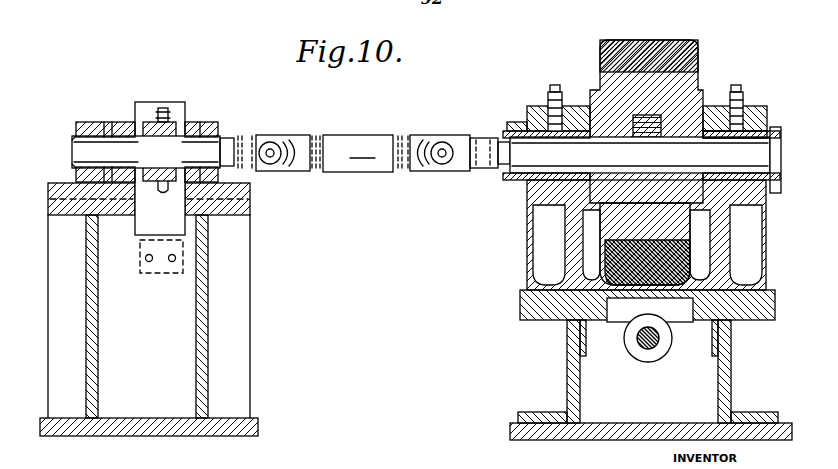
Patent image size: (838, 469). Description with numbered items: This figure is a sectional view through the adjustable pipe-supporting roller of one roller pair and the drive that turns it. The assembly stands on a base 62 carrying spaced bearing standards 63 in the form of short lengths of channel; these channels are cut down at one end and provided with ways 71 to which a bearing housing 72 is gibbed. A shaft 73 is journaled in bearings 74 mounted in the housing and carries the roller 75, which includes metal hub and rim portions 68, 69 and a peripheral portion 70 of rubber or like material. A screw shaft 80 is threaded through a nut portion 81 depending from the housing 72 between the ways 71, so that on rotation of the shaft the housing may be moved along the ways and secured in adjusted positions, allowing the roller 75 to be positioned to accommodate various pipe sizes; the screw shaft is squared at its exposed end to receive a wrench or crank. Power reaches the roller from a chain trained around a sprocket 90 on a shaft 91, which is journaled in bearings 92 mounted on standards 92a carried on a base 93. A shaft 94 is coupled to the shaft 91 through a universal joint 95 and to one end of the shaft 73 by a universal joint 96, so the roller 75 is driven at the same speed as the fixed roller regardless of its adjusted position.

The base 62 is at (612, 438).
The bearing standards 63 is at (567, 378).
The hub portion 68 is at (704, 107).
The rim portion 69 is at (690, 80).
The peripheral portion 70 is at (630, 44).
The ways 71 is at (527, 296).
The bearing housing 72 is at (575, 250).
The shaft 73 is at (747, 153).
The bearings 74 is at (540, 118).
The roller 75 is at (630, 90).
The screw shaft 80 is at (640, 354).
The nut portion 81 is at (660, 354).
The sprocket 90 is at (165, 108).
The shaft 91 is at (86, 152).
The bearings 92 is at (76, 129).
The standards 92a is at (98, 316).
The base 93 is at (168, 430).
The shaft 94 is at (375, 170).
The universal joint 95 is at (244, 138).
The universal joint 96 is at (437, 173).